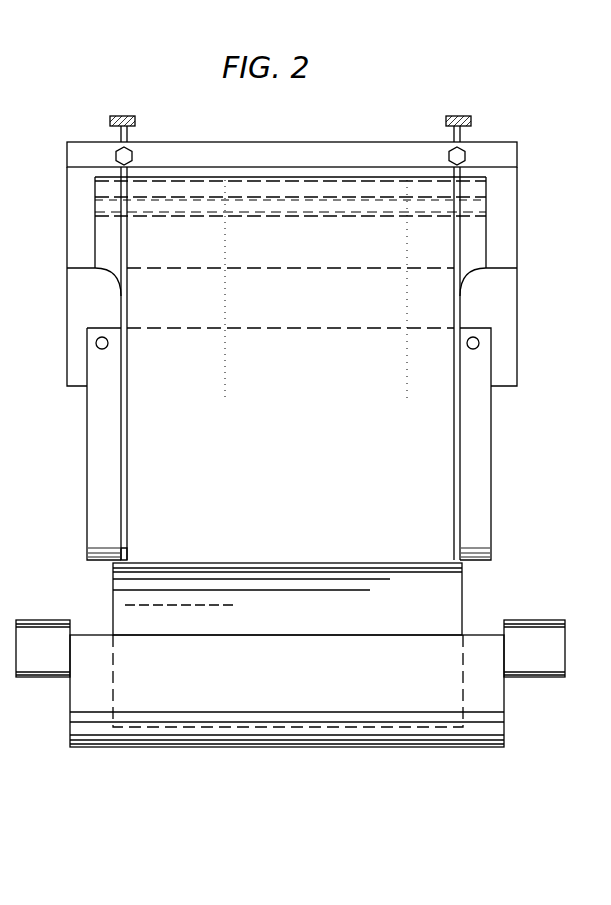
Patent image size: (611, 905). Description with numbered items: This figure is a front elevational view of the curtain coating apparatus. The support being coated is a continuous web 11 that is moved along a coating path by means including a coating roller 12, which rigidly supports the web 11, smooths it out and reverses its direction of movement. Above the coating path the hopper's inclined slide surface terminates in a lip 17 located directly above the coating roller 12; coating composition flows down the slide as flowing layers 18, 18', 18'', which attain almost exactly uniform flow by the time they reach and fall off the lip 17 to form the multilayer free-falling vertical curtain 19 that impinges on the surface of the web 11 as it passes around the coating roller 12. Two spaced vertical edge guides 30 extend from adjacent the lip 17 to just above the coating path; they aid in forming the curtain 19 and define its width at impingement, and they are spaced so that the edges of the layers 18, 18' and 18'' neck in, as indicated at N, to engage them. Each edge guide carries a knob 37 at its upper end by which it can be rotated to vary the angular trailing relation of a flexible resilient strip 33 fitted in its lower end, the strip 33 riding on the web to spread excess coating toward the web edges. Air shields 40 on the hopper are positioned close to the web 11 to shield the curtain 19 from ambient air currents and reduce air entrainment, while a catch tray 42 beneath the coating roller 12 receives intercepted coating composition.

The web 11 is at (125, 604).
The coating roller 12 is at (113, 583).
The lip 17 is at (503, 268).
The flowing layer 18 is at (257, 227).
The flowing layer 18' is at (257, 207).
The flowing layer 18'' is at (257, 189).
The multilayer free-falling vertical curtain 19 is at (340, 447).
The edge guides 30 is at (119, 413).
The strip 33 is at (125, 557).
The knob 37 is at (131, 120).
The air shields 40 is at (480, 477).
The catch tray 42 is at (312, 684).